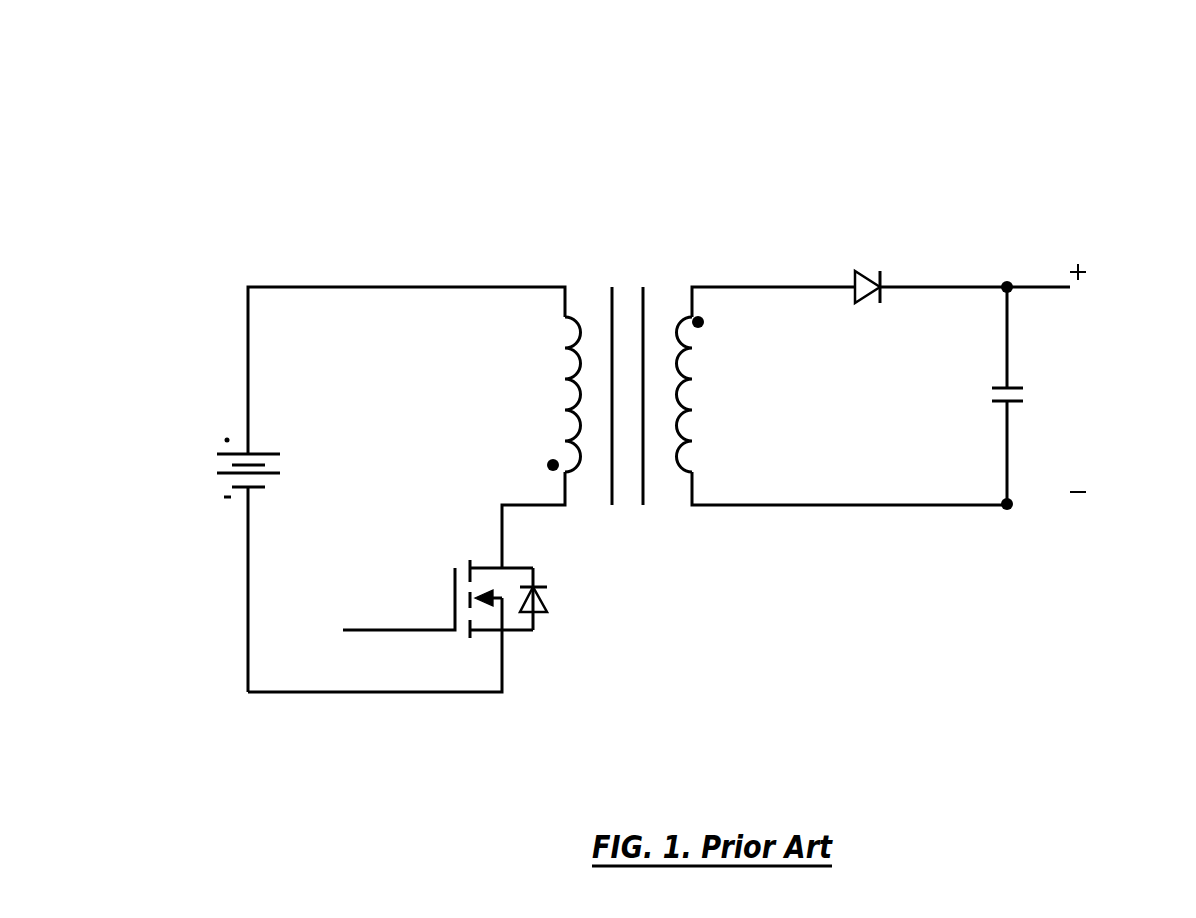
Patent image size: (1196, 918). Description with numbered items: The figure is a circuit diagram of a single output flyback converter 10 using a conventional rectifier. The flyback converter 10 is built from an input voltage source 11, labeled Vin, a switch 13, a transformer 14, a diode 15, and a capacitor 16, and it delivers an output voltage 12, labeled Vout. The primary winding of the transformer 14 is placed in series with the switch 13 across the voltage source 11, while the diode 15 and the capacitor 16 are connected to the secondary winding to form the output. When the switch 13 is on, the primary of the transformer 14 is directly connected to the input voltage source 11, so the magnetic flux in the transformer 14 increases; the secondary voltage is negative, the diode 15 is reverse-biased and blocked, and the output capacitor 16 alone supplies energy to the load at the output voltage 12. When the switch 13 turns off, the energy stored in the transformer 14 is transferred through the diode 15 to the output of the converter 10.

The flyback converter 10 is at (704, 118).
The voltage source 11 is at (182, 422).
The output voltage 12 is at (1156, 458).
The switch 13 is at (542, 665).
The transformer 14 is at (639, 550).
The diode 15 is at (870, 277).
The capacitor 16 is at (992, 388).